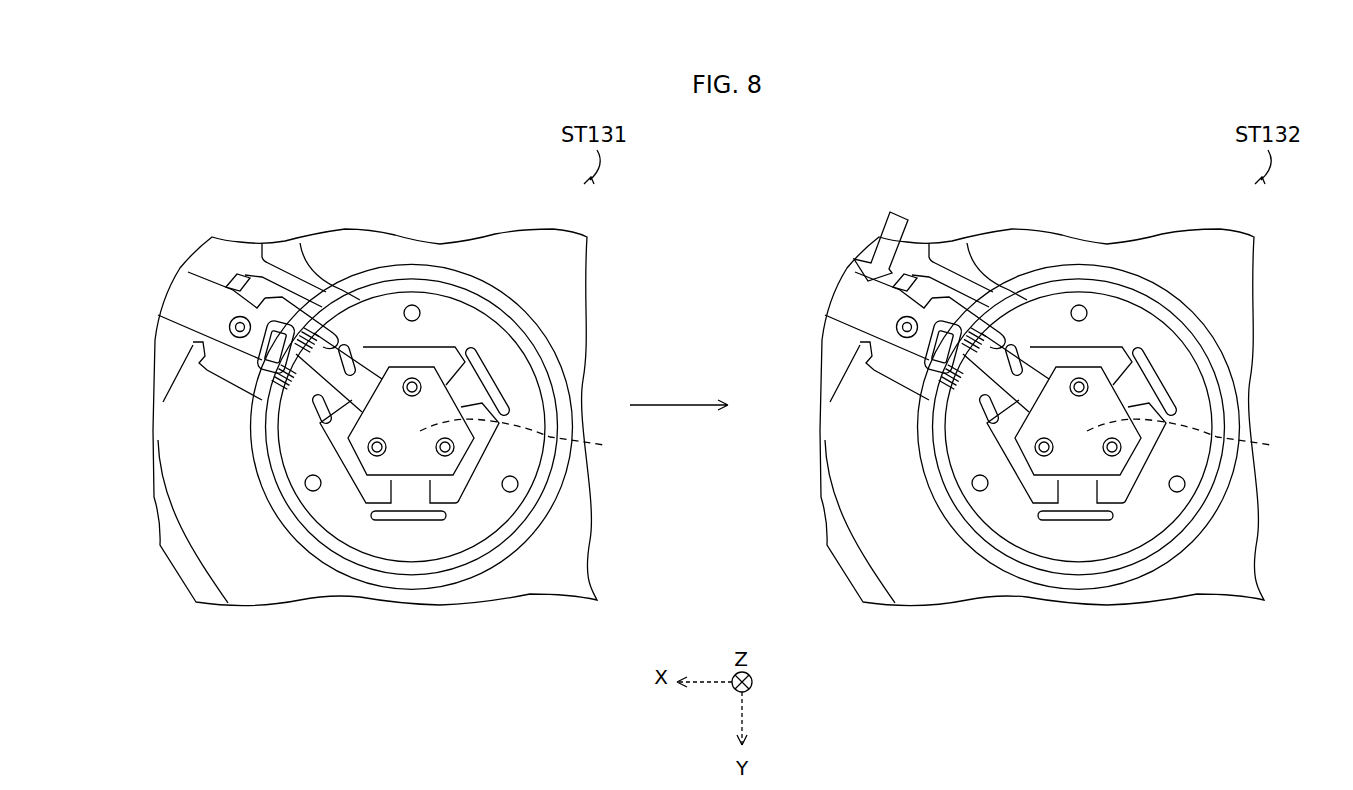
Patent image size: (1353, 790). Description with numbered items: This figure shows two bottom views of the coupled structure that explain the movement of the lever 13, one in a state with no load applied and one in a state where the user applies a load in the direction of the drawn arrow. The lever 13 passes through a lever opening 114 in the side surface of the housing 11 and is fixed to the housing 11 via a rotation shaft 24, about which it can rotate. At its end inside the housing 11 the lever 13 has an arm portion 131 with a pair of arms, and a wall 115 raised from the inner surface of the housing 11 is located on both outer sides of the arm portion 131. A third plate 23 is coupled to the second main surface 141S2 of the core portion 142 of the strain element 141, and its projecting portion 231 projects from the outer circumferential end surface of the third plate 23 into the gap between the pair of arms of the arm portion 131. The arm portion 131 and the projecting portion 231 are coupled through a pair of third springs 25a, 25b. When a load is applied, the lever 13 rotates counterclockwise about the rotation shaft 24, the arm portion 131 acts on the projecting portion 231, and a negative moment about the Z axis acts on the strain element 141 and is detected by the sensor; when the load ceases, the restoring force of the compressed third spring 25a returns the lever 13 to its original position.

The housing 11 is at (570, 279).
The lever 13 is at (183, 296).
The third plate 23 is at (435, 465).
The rotation shaft 24 is at (229, 328).
The third spring 25a is at (252, 436).
The third spring 25b is at (362, 303).
The lever opening 114 is at (227, 287).
The wall 115 is at (275, 280).
The arm portion 131 is at (298, 318).
The strain element 141 is at (481, 330).
The second main surface 141S2 is at (503, 363).
The core portion 142 is at (866, 438).
The projecting portion 231 is at (340, 390).